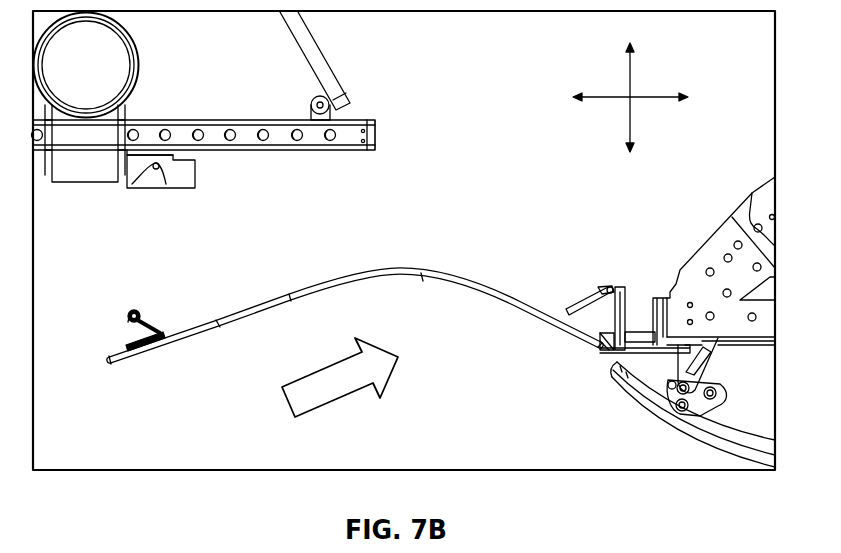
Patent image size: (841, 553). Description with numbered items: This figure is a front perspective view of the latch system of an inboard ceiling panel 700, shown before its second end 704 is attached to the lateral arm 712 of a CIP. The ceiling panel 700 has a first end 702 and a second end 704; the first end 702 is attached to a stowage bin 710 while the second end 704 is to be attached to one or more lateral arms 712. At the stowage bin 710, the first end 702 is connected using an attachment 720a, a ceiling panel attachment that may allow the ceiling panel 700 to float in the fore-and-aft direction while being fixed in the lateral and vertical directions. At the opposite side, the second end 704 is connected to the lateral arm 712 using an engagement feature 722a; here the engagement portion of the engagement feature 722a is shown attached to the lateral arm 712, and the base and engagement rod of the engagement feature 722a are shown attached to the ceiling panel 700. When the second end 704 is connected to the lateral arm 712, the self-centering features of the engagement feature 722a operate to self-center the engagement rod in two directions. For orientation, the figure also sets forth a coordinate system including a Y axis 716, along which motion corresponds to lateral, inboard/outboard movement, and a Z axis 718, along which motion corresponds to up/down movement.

The inboard ceiling panel 700 is at (400, 279).
The first end 702 is at (600, 347).
The second end 704 is at (110, 360).
The stowage bin 710 is at (690, 227).
The lateral arm 712 is at (200, 120).
The Y axis 716 is at (655, 95).
The Z axis 718 is at (628, 72).
The attachment 720a is at (598, 288).
The engagement feature 722a is at (138, 192).